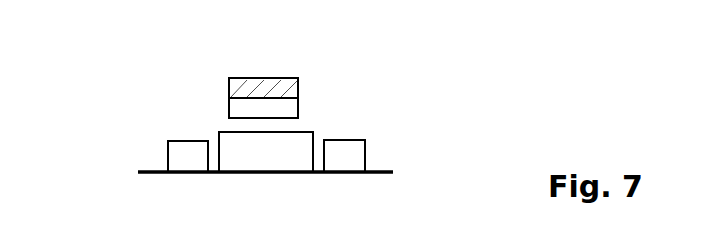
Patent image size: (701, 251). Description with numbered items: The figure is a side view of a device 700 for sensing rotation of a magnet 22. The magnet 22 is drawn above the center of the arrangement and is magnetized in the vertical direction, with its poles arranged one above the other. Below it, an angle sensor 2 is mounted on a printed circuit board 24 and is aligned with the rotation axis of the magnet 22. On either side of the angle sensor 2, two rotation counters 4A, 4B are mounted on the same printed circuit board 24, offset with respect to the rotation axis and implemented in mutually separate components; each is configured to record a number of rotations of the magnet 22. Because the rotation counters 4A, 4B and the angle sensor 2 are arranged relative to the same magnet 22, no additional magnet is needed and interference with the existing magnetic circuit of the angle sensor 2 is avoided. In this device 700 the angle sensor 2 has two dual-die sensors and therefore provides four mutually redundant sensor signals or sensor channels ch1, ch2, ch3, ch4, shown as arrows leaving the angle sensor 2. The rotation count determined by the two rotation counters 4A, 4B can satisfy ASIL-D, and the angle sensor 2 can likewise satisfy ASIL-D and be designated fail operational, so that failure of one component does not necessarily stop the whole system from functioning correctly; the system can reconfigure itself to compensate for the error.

The device 700 is at (118, 35).
The printed circuit board 24 is at (387, 168).
The angle sensor 2 is at (265, 162).
The rotation counter 4A is at (197, 162).
The rotation counter 4B is at (337, 162).
The magnet 22 is at (260, 107).
The sensor channel ch1 is at (222, 129).
The sensor channel ch2 is at (310, 129).
The sensor channel ch3 is at (222, 129).
The sensor channel ch4 is at (310, 129).